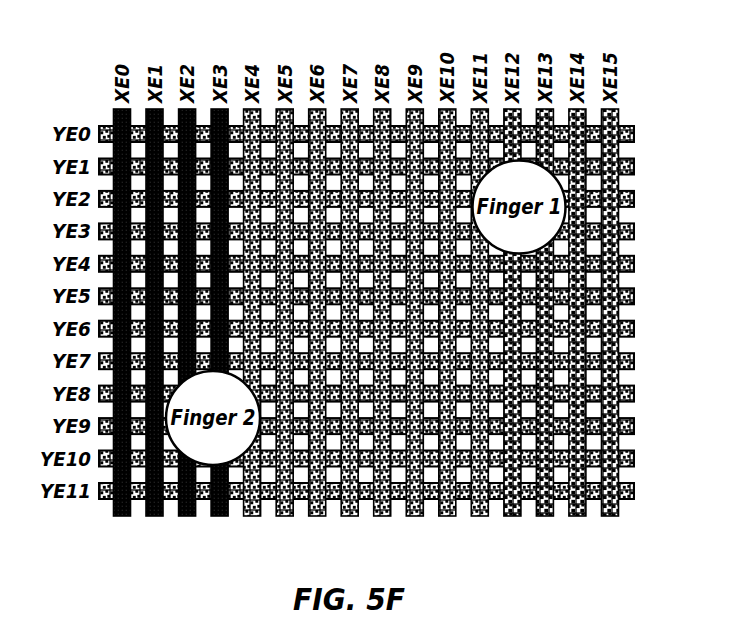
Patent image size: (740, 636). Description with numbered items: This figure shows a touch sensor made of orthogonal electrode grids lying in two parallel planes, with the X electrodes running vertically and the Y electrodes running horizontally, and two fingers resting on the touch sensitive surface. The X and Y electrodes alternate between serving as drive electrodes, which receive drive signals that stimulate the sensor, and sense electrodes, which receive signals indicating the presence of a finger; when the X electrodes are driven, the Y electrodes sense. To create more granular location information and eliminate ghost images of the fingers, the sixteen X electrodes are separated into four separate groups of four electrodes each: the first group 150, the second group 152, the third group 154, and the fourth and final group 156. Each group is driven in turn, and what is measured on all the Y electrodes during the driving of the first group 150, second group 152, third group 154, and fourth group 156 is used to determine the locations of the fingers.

The first group of X electrodes 150 is at (111, 516).
The second group of X electrodes 152 is at (241, 516).
The third group of X electrodes 154 is at (371, 516).
The fourth group of X electrodes 156 is at (502, 516).